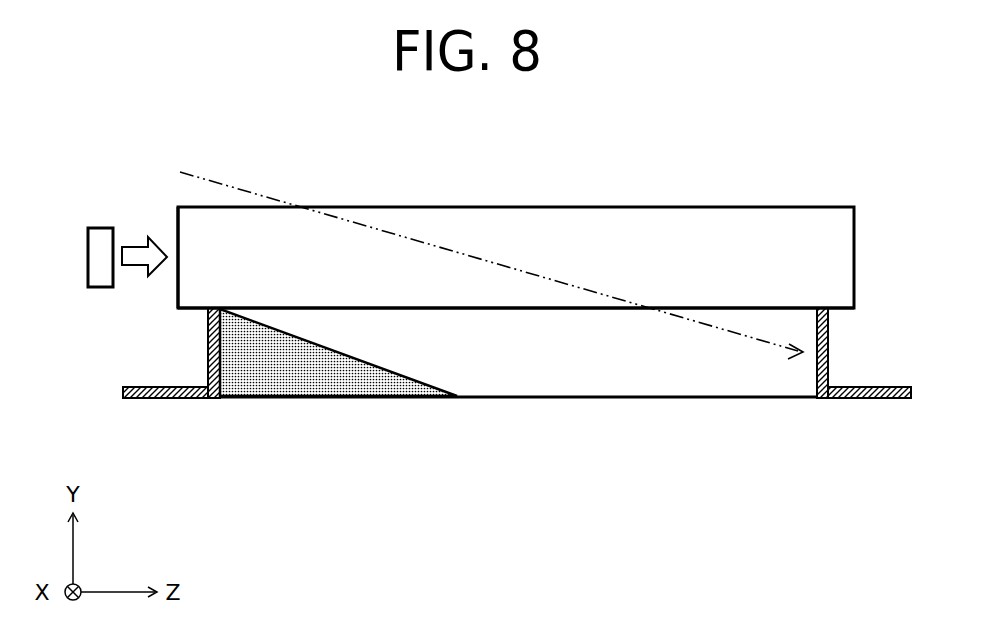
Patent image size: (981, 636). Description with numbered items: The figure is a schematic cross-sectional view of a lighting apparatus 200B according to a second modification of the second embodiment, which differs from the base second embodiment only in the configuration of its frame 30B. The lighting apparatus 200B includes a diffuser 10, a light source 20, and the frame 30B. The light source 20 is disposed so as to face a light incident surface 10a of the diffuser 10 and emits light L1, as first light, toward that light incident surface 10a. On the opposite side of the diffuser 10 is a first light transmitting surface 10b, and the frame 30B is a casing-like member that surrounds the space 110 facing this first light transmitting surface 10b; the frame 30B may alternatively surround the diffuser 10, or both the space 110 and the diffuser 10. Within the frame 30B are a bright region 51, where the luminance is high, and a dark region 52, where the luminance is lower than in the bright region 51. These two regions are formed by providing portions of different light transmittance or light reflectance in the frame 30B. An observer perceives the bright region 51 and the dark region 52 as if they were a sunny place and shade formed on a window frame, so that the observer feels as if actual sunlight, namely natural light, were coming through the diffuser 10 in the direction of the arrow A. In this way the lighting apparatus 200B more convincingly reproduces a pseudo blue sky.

The lighting apparatus 200B is at (444, 159).
The diffuser 10 is at (638, 206).
The light incident surface 10a is at (178, 222).
The first light transmitting surface 10b is at (570, 310).
The light source 20 is at (98, 227).
The light L1 is at (140, 266).
The arrow A is at (251, 194).
The frame 30B is at (200, 399).
The bright region 51 is at (646, 384).
The dark region 52 is at (357, 394).
The space 110 is at (492, 446).